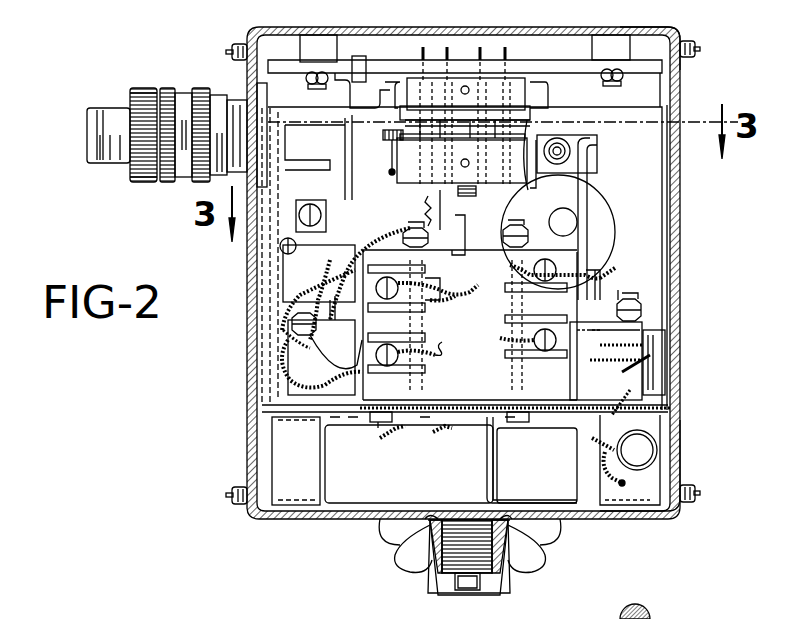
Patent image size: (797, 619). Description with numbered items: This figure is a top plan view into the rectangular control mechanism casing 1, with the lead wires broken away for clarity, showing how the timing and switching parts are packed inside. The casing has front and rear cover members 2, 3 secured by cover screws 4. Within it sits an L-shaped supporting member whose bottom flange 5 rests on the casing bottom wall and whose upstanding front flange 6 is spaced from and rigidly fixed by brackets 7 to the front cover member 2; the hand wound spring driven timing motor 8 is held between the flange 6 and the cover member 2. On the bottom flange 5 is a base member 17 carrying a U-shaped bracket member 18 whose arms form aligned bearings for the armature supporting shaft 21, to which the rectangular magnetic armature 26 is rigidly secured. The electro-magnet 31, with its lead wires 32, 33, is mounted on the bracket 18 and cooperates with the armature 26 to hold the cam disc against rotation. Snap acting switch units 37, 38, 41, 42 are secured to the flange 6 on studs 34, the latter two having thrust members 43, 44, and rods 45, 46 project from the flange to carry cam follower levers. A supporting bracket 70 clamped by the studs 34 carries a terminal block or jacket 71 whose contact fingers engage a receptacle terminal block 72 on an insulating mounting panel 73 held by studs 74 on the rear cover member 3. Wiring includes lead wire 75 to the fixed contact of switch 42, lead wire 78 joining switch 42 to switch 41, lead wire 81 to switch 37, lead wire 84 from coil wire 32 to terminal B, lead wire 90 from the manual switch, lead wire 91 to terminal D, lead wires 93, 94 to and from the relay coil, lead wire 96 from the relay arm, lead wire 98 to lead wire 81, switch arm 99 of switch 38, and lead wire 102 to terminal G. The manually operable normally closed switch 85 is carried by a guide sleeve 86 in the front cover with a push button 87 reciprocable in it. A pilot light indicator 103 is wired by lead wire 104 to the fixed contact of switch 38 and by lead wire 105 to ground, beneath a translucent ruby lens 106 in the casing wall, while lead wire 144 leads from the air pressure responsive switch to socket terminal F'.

The control mechanism casing 1 is at (256, 428).
The front end cover member 2 is at (666, 512).
The rear end cover member 3 is at (676, 26).
The cover screws 4 is at (238, 48).
The bottom flange 5 is at (644, 107).
The front flange 6 is at (595, 428).
The brackets 7 is at (486, 458).
The timing motor 8 is at (537, 465).
The base member 17 is at (598, 150).
The U-shaped bracket member 18 is at (588, 172).
The armature supporting shaft 21 is at (460, 255).
The armature 26 is at (420, 208).
The electro-magnet 31 is at (603, 218).
The lead wire 32 is at (600, 285).
The lead wire 33 is at (618, 270).
The studs 34 is at (404, 238).
The switch unit 37 is at (470, 325).
The switch unit 38 is at (467, 351).
The switch unit 41 is at (317, 297).
The switch unit 42 is at (617, 361).
The thrust member 43 is at (357, 368).
The thrust member 44 is at (588, 333).
The rod 45 is at (530, 427).
The rod 46 is at (370, 425).
The supporting bracket 70 is at (350, 182).
The terminal block or jacket 71 is at (528, 180).
The terminal block or receptacle 72 is at (520, 105).
The mounting panel 73 is at (340, 78).
The studs 74 is at (306, 84).
The lead wire 75 is at (440, 240).
The lead wire 78 is at (283, 352).
The lead wire 81 is at (430, 312).
The lead wire 84 is at (495, 262).
The manually operable switch 85 is at (382, 461).
The guide and supporting sleeve 86 is at (437, 567).
The push button 87 is at (458, 590).
The lead wire 90 is at (448, 432).
The lead wire 91 is at (598, 362).
The lead wire 93 is at (290, 294).
The lead wire 94 is at (320, 290).
The lead wire 96 is at (345, 262).
The lead wire 98 is at (290, 338).
The switch arm 99 is at (438, 358).
The lead wire 102 is at (500, 338).
The pilot light indicator 103 is at (657, 448).
The lead wire 104 is at (600, 446).
The lead wire 105 is at (610, 476).
The translucent ruby lens 106 is at (660, 612).
The lead wire 144 is at (149, 184).